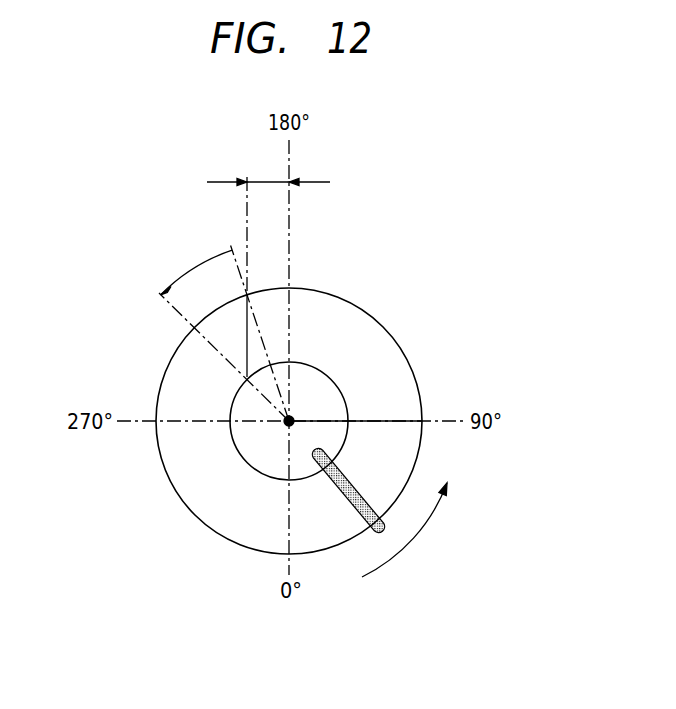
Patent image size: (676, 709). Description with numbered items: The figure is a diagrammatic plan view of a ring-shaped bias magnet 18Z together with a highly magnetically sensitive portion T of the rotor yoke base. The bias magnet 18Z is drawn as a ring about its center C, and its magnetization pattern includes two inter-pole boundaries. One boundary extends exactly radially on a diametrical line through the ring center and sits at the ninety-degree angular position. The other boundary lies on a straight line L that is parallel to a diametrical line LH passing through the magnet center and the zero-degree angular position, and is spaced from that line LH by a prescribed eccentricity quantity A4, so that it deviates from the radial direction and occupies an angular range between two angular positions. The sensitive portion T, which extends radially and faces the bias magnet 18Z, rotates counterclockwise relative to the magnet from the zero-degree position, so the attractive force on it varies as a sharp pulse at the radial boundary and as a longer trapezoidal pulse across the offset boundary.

The ring-shaped bias magnet 18Z is at (338, 297).
The inner circle (bore) C is at (312, 367).
The diametrical line LH is at (289, 268).
The straight line L is at (246, 210).
The eccentricity quantity A4 is at (268, 168).
The sensitive portion T is at (352, 510).